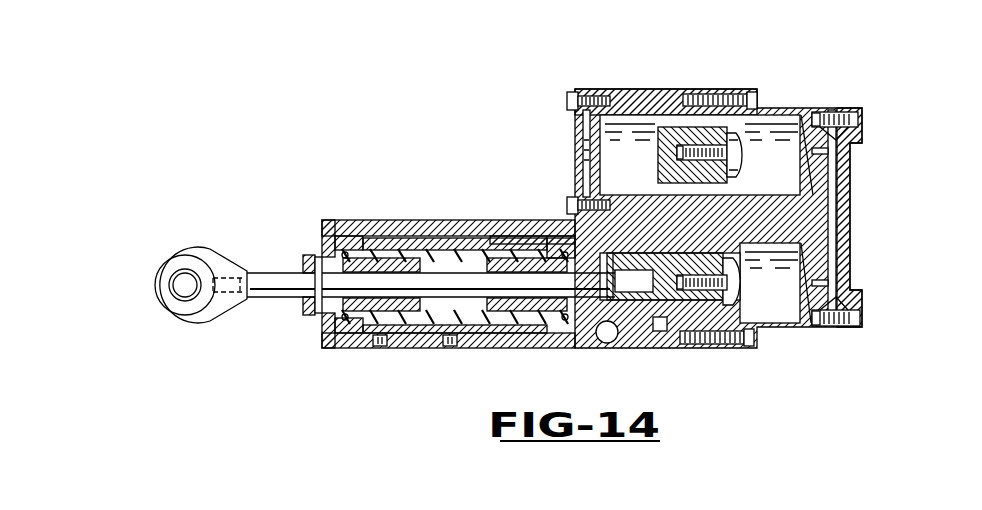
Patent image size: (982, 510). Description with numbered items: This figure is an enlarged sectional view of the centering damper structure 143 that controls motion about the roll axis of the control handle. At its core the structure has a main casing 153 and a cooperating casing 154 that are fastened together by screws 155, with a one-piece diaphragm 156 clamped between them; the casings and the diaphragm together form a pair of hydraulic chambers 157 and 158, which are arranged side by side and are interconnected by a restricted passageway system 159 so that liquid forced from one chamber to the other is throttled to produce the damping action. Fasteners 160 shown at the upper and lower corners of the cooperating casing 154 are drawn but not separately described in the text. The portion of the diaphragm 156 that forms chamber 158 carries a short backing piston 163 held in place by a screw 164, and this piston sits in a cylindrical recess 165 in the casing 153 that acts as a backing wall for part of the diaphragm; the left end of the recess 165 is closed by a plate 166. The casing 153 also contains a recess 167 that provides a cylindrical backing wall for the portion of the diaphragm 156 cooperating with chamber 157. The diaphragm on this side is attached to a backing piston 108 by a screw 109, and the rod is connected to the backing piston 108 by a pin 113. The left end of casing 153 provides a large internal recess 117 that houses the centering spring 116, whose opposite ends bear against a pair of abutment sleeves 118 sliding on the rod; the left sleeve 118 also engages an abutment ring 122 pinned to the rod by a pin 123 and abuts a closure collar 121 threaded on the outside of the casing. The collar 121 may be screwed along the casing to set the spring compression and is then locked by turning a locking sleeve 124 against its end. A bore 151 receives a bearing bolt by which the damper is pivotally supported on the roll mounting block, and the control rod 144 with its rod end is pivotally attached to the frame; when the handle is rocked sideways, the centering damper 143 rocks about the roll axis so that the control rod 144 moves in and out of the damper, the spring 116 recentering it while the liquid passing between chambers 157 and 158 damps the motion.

The backing piston 108 is at (672, 346).
The screw 109 is at (742, 283).
The pin 113 is at (612, 298).
The centering spring 116 is at (500, 327).
The internal recess 117 is at (398, 248).
The abutment sleeves 118 is at (540, 247).
The closure collar 121 is at (322, 336).
The abutment ring 122 is at (298, 256).
The pin 123 is at (315, 313).
The locking sleeve 124 is at (452, 222).
The centering damper structure 143 is at (800, 67).
The control rod 144 is at (257, 272).
The bore 151 is at (604, 343).
The main casing 153 is at (650, 90).
The cooperating casing 154 is at (845, 177).
The screws 155 is at (755, 90).
The diaphragm 156 is at (727, 190).
The chamber 157 is at (773, 312).
The chamber 158 is at (778, 125).
The restricted passageway system 159 is at (834, 216).
The bolt 160 is at (826, 122).
The backing piston 163 is at (658, 164).
The screw 164 is at (743, 148).
The cylindrical recess 165 is at (630, 122).
The plate 166 is at (580, 133).
The recess 167 is at (658, 333).